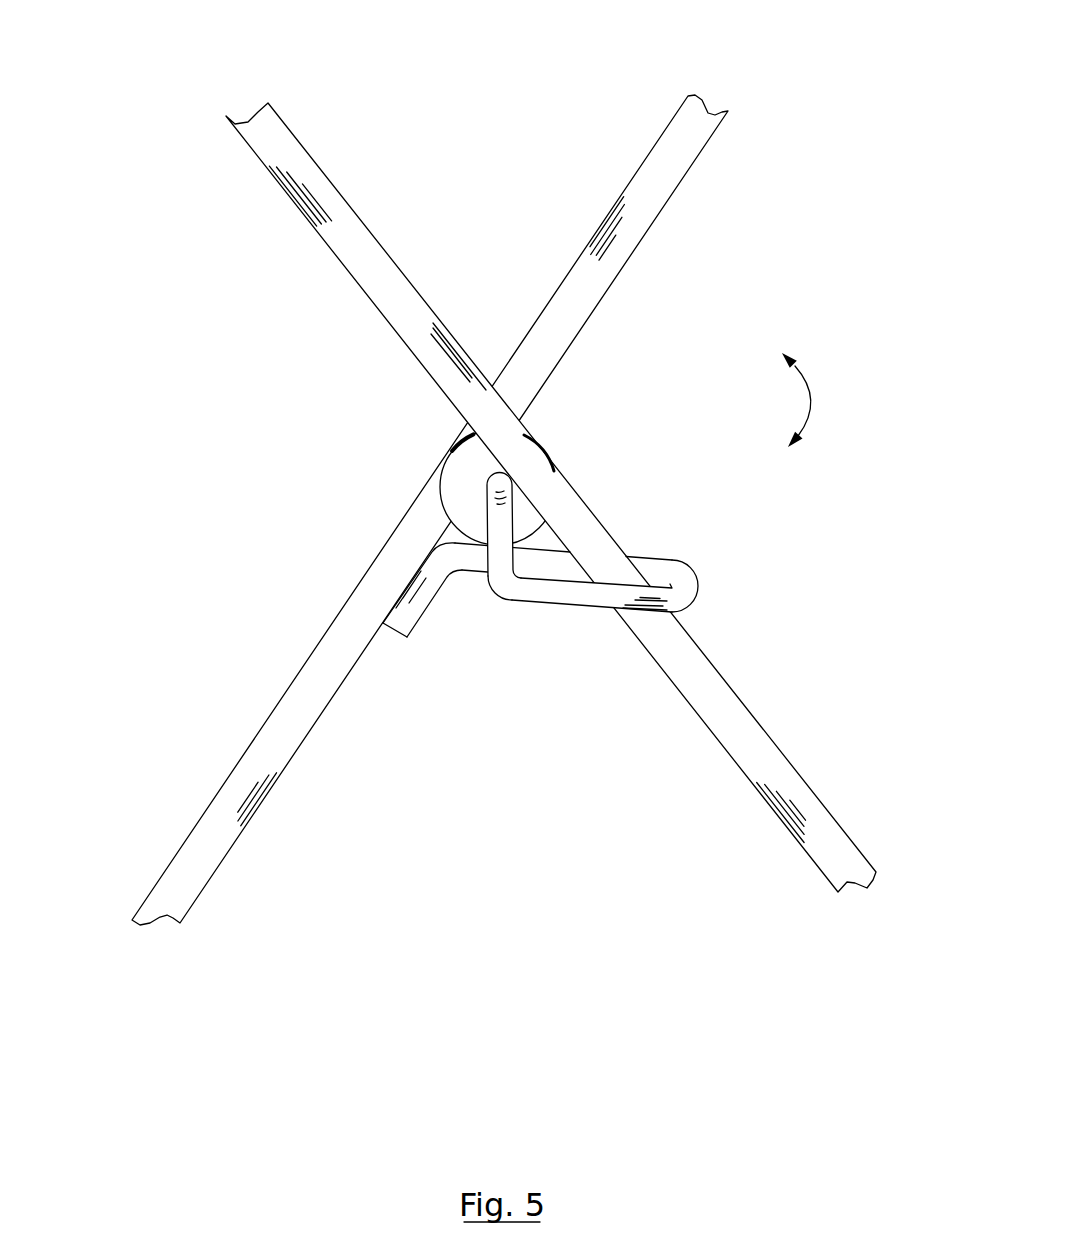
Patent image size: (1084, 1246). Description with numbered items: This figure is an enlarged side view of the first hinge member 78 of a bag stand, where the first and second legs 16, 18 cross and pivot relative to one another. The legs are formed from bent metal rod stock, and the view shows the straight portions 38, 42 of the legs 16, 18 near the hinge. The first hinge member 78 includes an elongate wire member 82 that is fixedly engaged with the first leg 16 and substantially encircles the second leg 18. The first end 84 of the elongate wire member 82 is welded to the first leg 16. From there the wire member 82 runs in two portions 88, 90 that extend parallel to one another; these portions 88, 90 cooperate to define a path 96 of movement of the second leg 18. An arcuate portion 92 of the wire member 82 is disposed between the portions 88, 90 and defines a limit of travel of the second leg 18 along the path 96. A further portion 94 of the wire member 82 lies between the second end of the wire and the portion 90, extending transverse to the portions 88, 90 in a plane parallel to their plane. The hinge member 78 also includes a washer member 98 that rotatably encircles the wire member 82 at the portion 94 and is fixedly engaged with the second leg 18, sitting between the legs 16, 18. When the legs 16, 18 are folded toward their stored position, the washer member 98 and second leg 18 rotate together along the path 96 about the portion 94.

The first leg 16 is at (497, 486).
The second leg 18 is at (498, 468).
The straight portion 38 is at (665, 190).
The straight portion 42 is at (241, 131).
The first hinge member 78 is at (481, 484).
The elongate wire member 82 is at (524, 569).
The first end 84 is at (390, 628).
The portion 88 is at (557, 567).
The portion 90 is at (570, 597).
The arcuate portion 92 is at (687, 592).
The portion 94 is at (494, 498).
The path 96 is at (815, 400).
The washer member 98 is at (461, 471).